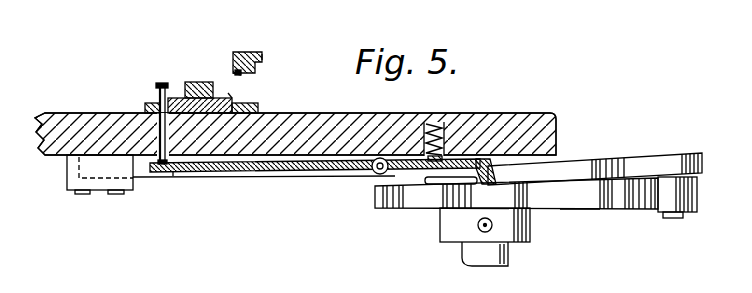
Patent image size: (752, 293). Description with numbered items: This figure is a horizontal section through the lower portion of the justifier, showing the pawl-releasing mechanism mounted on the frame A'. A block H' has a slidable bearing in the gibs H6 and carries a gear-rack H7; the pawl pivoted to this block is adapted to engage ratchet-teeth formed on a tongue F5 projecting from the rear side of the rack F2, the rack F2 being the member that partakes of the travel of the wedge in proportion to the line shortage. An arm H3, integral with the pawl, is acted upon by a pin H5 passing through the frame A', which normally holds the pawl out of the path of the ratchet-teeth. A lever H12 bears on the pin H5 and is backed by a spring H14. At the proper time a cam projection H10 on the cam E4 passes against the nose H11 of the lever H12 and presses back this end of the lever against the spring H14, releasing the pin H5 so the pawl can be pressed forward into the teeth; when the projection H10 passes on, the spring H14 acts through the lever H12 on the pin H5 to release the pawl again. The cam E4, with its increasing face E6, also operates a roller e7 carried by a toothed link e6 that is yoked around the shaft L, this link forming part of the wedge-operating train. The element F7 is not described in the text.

The frame A' is at (295, 123).
The arm H3 is at (163, 84).
The pin H5 is at (159, 97).
The gibs H6 is at (276, 107).
The gear-rack H7 is at (202, 83).
The rack F2 is at (236, 57).
The arm F7 is at (262, 56).
The tongue F5 is at (292, 78).
The block H' is at (256, 92).
The spring H14 is at (437, 124).
The lever H12 is at (282, 175).
The nose H11 is at (491, 174).
The cam projection H10 is at (438, 179).
The link e6 is at (656, 147).
The increasing face E6 is at (516, 193).
The cam E4 is at (580, 222).
The roller e7 is at (697, 193).
The shaft L is at (458, 255).